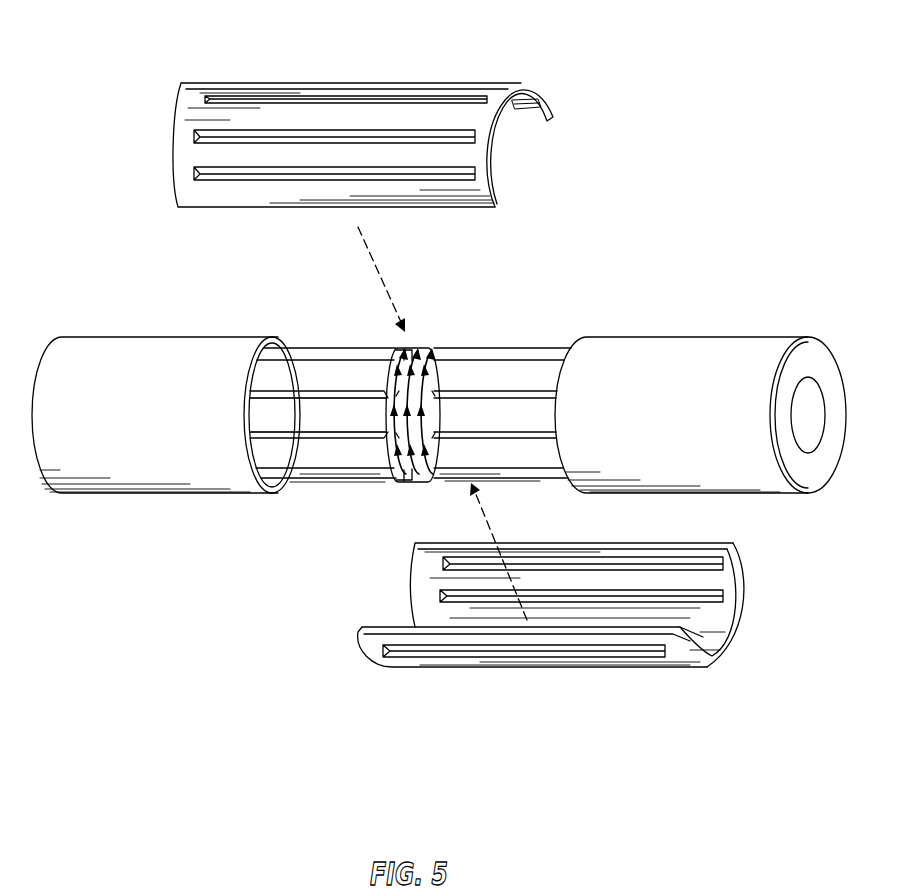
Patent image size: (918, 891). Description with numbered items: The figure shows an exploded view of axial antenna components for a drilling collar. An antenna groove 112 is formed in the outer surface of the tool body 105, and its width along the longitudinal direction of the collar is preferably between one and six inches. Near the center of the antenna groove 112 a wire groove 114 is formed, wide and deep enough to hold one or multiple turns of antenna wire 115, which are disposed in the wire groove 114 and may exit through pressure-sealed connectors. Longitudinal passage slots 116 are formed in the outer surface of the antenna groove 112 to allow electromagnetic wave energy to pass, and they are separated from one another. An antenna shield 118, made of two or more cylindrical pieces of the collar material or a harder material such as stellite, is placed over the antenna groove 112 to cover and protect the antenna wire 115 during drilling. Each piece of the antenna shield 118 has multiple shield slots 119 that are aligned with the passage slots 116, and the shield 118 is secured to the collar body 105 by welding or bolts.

The tool body 105 is at (712, 337).
The antenna groove 112 is at (410, 411).
The wire groove 114 is at (414, 412).
The antenna wire 115 is at (400, 462).
The longitudinal slots 116 is at (322, 436).
The antenna shield 118 is at (416, 86).
The shield slots 119 is at (372, 640).